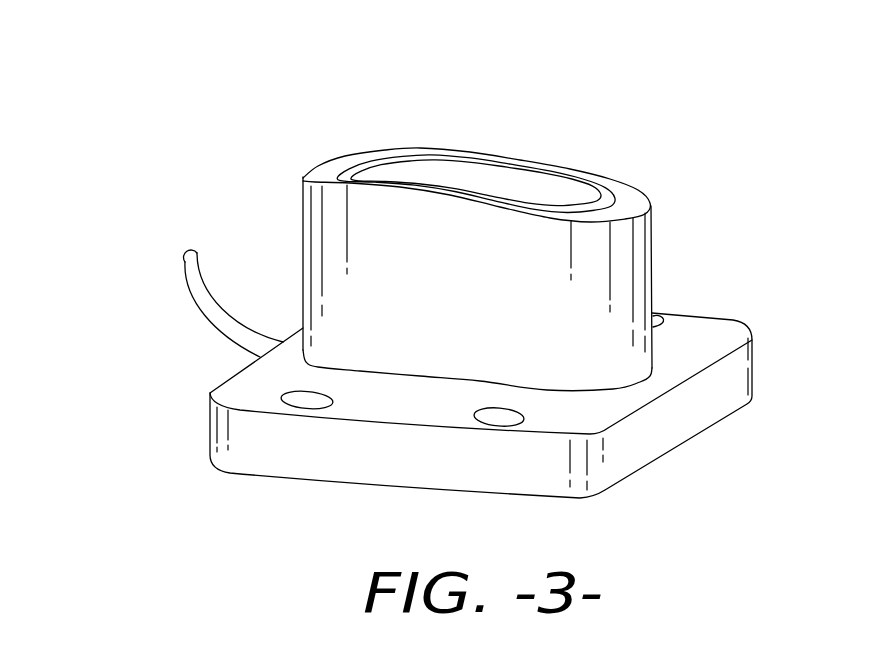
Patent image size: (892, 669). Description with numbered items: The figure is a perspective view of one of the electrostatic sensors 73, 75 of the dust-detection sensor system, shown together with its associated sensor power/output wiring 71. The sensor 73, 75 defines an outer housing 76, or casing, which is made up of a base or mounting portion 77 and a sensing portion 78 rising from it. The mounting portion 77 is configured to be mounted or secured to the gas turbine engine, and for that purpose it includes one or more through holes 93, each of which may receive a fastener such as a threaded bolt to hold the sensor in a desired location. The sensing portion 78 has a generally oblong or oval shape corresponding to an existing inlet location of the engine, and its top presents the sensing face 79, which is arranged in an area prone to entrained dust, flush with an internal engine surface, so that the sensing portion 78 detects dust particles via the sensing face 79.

The sensor power/output wiring 71 is at (202, 313).
The electrostatic sensor 73 is at (465, 302).
The electrostatic sensor 75 is at (465, 302).
The outer housing 76 is at (652, 263).
The mounting portion 77 is at (752, 354).
The sensing portion 78 is at (300, 250).
The sensing face 79 is at (532, 190).
The through holes 93 is at (310, 400).